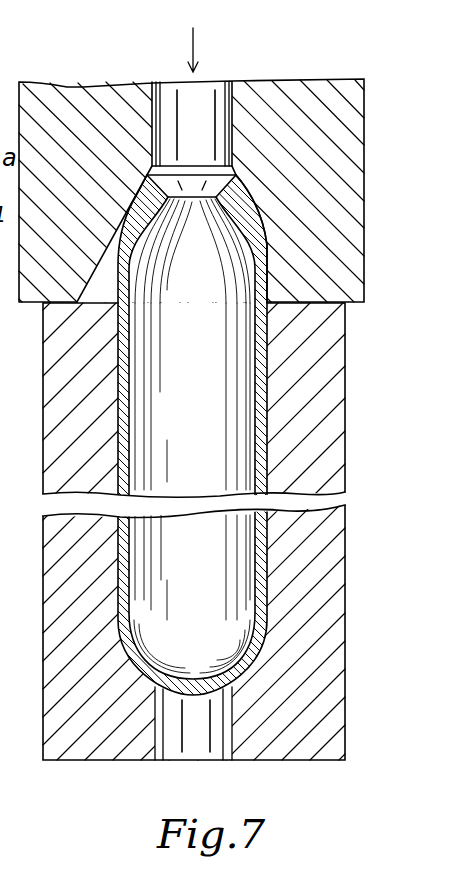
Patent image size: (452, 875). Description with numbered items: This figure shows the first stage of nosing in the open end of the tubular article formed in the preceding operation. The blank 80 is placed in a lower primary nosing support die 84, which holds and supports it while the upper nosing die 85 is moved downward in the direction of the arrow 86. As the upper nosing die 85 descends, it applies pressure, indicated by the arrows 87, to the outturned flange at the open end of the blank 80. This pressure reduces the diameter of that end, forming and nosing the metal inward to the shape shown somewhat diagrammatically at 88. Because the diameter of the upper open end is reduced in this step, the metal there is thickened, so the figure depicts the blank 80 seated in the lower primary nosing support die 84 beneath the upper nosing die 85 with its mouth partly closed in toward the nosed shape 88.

The blank 80 is at (260, 427).
The lower primary nosing support die 84 is at (52, 452).
The upper nosing die 85 is at (288, 90).
The arrow 86 is at (194, 42).
The arrows 87 is at (131, 206).
The nosed-in shape 88 is at (149, 206).